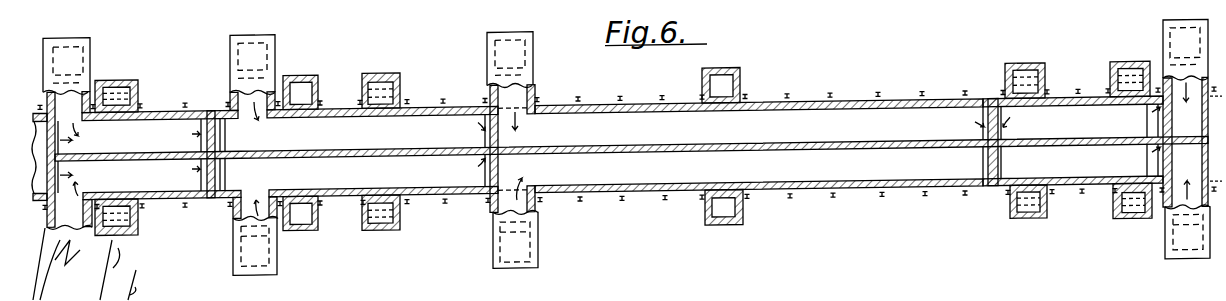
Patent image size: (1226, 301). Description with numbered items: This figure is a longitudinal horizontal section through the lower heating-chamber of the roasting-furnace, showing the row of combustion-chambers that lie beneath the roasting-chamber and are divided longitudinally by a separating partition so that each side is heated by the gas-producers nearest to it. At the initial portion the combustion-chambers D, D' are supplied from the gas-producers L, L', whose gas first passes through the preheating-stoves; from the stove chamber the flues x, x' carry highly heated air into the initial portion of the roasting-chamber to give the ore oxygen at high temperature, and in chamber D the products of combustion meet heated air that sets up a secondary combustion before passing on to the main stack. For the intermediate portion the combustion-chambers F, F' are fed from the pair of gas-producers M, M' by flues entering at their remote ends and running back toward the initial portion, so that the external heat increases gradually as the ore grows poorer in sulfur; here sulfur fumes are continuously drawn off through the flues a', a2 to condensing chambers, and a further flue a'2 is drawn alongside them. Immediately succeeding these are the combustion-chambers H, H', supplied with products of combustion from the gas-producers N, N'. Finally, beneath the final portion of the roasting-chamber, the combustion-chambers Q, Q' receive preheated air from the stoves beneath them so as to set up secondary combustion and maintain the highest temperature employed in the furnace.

The combustion-chamber Q' is at (140, 97).
The combustion-chamber Q is at (144, 198).
The gas-producer N' is at (268, 66).
The gas-producer N is at (265, 245).
The flue a' is at (520, 72).
The flue a2 is at (303, 231).
The supporting bracket a'2 is at (736, 217).
The combustion-chamber H' is at (382, 126).
The combustion-chamber H is at (383, 178).
The combustion-chamber F' is at (759, 123).
The combustion-chamber F is at (759, 174).
The combustion-chamber D' is at (1073, 115).
The combustion-chamber D is at (1073, 170).
The gas-producer M' is at (484, 56).
The gas-producer M is at (537, 242).
The flue x' is at (1077, 66).
The flue x is at (1081, 216).
The gas-producer L' is at (1163, 50).
The gas-producer L is at (1183, 246).